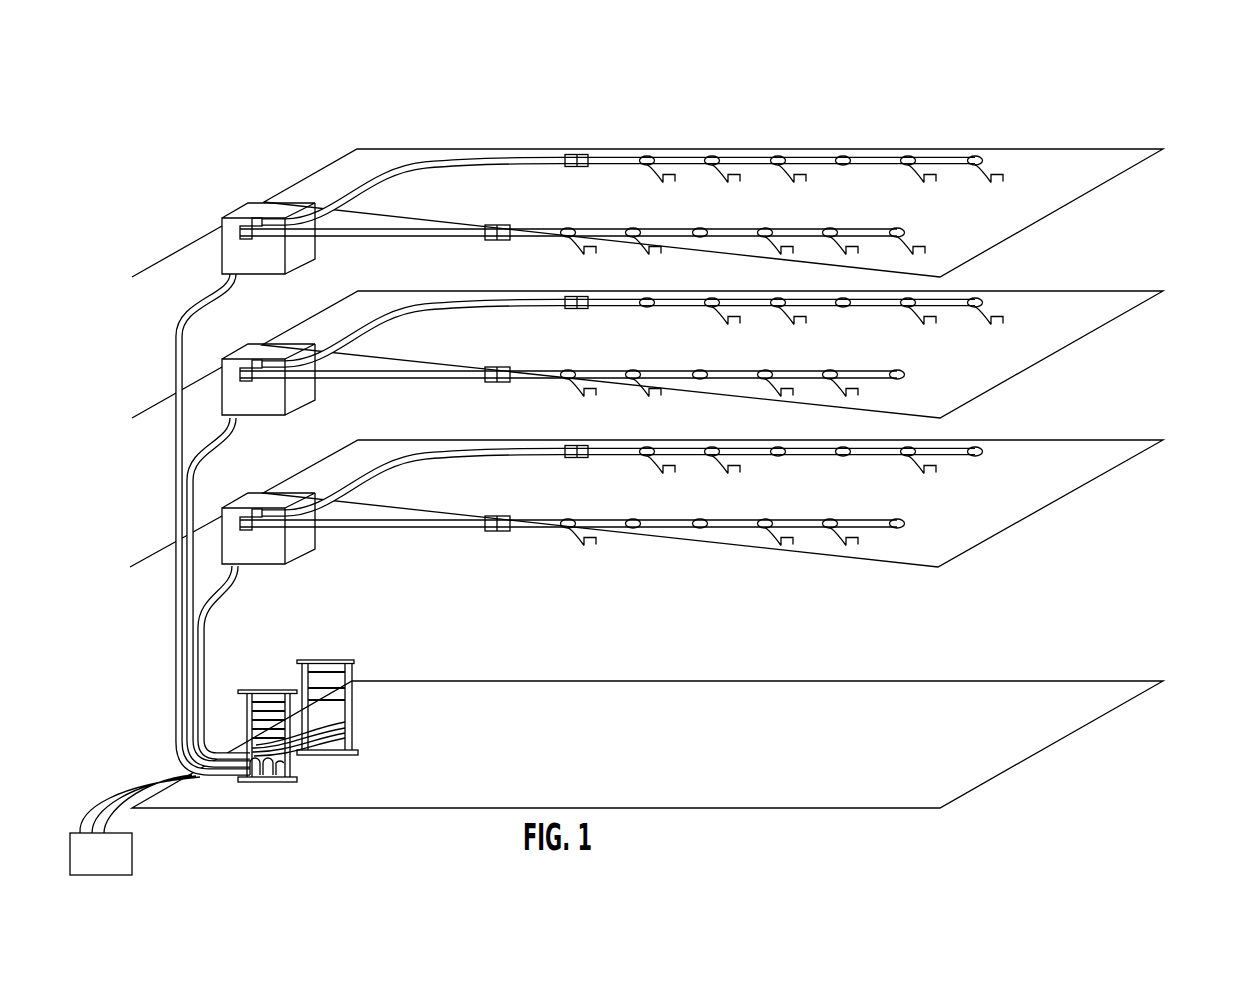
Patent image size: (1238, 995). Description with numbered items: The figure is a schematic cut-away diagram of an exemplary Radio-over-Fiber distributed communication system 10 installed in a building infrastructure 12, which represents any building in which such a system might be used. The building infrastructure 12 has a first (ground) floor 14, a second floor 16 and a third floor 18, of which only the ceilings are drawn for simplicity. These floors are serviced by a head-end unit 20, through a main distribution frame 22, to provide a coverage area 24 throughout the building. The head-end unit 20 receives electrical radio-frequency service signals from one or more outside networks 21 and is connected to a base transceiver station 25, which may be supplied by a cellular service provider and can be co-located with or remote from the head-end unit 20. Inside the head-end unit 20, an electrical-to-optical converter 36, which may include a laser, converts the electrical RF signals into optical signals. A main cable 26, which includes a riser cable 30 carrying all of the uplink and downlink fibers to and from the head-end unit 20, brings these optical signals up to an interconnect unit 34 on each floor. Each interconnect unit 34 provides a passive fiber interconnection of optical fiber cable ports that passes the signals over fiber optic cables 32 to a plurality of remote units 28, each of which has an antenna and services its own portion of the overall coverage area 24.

The Radio-over-Fiber distributed communication system 10 is at (727, 135).
The building infrastructure 12 is at (170, 677).
The first (ground) floor 14 is at (1083, 578).
The second floor 16 is at (637, 485).
The third floor 18 is at (1134, 242).
The head-end unit 20 is at (251, 749).
The outside networks 21 is at (90, 869).
The main distribution frame 22 is at (325, 754).
The coverage area 24 is at (1191, 162).
The base transceiver station 25 is at (350, 688).
The main cable 26 is at (120, 572).
The remote units 28 is at (1003, 321).
The riser cable 30 is at (175, 598).
The fiber optic cables 32 is at (435, 163).
The interconnect unit 34 is at (221, 250).
The electrical-to-optical converter 36 is at (236, 690).